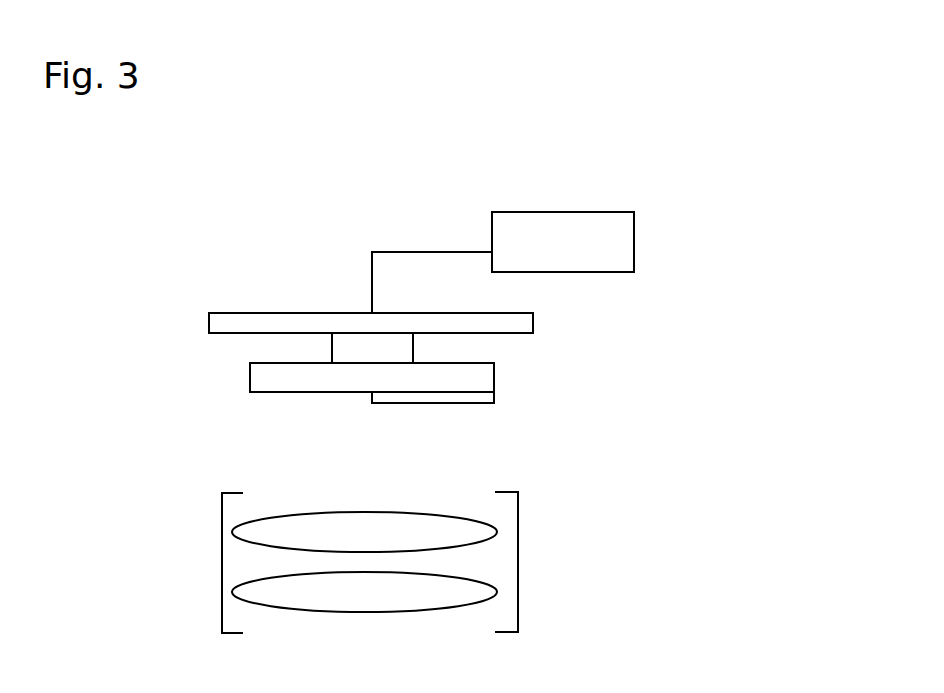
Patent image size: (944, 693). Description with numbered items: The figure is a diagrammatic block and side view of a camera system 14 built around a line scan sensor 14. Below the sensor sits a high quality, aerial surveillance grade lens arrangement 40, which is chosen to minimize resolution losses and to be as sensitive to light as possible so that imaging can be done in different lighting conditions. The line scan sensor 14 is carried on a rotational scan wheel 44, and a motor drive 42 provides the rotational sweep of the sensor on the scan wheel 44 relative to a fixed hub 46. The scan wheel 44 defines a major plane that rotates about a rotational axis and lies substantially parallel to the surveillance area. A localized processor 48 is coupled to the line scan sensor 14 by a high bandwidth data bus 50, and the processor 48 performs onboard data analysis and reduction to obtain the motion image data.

The line scan sensor 14 is at (671, 155).
The lens arrangement 40 is at (222, 550).
The motor drive 42 is at (330, 348).
The rotational scan wheel 44 is at (495, 368).
The fixed hub 46 is at (535, 318).
The localized processor 48 is at (635, 250).
The high bandwidth data bus 50 is at (447, 252).